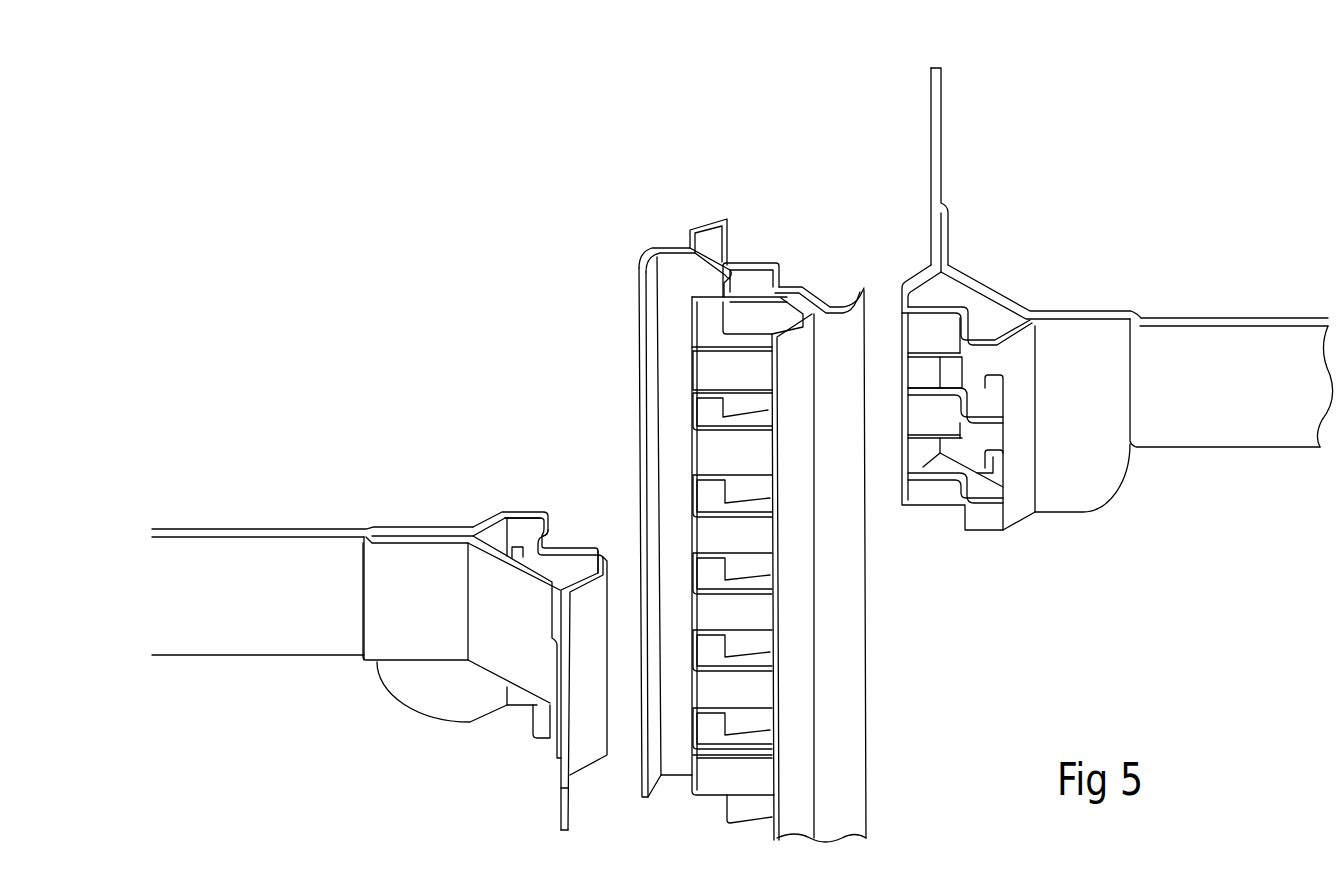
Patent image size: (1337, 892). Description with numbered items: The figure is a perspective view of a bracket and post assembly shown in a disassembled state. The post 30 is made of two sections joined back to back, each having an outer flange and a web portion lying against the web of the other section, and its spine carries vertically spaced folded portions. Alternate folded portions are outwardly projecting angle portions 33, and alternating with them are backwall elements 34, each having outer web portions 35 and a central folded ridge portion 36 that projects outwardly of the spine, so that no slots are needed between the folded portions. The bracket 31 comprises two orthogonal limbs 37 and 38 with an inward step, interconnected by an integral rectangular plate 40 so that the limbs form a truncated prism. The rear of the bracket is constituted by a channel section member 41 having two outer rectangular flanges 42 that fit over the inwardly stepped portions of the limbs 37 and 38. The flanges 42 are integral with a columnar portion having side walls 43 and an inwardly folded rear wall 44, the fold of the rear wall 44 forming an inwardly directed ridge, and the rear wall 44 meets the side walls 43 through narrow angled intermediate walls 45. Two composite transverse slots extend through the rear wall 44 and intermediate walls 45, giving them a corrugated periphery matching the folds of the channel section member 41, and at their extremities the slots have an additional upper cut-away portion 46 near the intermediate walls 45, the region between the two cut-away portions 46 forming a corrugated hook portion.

The post 30 is at (847, 787).
The bracket 31 is at (313, 640).
The outwardly projecting angle portions 33 is at (703, 372).
The backwall elements 34 is at (730, 313).
The outer web portions 35 is at (702, 275).
The central folded ridge portion 36 is at (748, 307).
The limb 37 is at (560, 812).
The limb 38 is at (243, 555).
The rectangular plate 40 is at (507, 663).
The channel section member 41 is at (487, 527).
The outer rectangular flanges 42 is at (432, 533).
The side walls 43 is at (590, 614).
The rear wall 44 is at (542, 528).
The intermediate walls 45 is at (520, 517).
The upper cut-away portion 46 is at (990, 378).